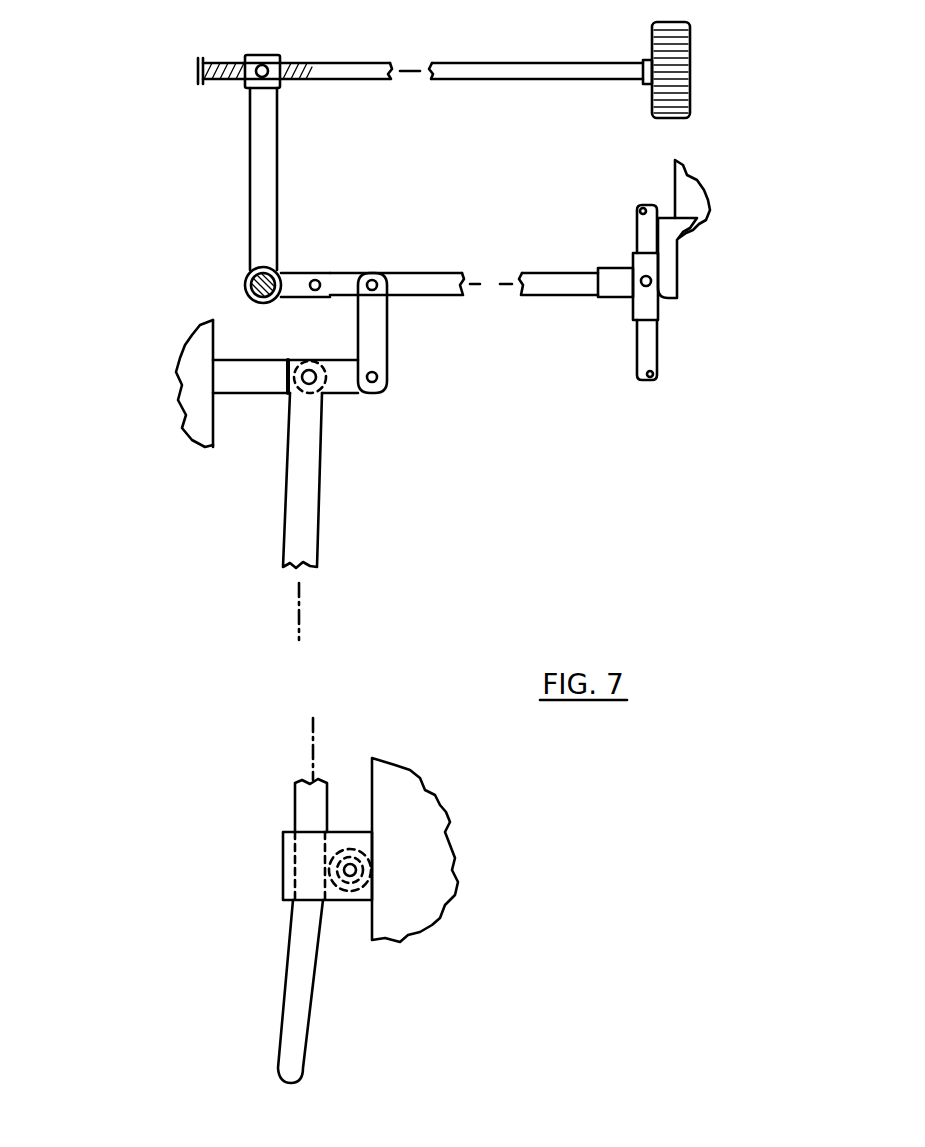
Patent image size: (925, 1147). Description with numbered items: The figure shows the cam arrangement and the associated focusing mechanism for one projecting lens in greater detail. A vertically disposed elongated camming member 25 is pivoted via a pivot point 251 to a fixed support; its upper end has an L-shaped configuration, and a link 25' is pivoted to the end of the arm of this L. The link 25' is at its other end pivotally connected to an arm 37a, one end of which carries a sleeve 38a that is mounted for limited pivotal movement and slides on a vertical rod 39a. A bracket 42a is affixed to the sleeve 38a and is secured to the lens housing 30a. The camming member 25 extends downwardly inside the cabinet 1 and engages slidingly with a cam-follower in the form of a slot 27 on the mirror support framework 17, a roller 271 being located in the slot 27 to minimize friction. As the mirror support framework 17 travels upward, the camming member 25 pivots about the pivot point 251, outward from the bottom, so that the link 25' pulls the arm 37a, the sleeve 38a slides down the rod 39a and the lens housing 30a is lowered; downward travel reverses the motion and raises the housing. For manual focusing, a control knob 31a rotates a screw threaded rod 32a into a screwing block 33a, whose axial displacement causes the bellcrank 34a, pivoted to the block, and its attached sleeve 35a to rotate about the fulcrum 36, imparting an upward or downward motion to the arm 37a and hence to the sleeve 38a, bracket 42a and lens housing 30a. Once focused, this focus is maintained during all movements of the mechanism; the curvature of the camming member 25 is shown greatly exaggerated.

The control knob 31a is at (692, 80).
The screw threaded rod 32a is at (385, 63).
The screwing block 33a is at (250, 56).
The bellcrank 34a is at (277, 192).
The sleeve 35a is at (245, 290).
The fulcrum 36 is at (282, 272).
The arm 37a is at (577, 272).
The sleeve 38a is at (633, 305).
The vertical rod 39a is at (657, 350).
The bracket 42a is at (673, 283).
The lens housing 30a is at (693, 200).
The link 25' is at (401, 333).
The cabinet 1 is at (203, 417).
The camming member 25 is at (299, 701).
The pivot point 251 is at (306, 380).
The slot 27 is at (338, 832).
The roller 271 is at (340, 887).
The mirror support framework 17 is at (421, 871).